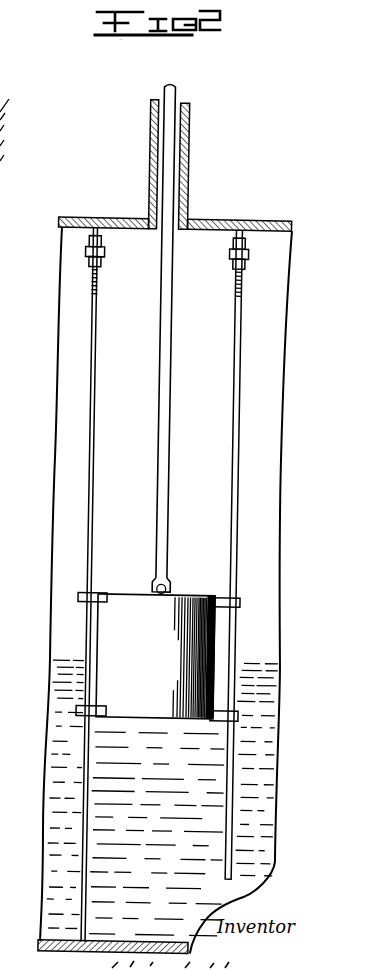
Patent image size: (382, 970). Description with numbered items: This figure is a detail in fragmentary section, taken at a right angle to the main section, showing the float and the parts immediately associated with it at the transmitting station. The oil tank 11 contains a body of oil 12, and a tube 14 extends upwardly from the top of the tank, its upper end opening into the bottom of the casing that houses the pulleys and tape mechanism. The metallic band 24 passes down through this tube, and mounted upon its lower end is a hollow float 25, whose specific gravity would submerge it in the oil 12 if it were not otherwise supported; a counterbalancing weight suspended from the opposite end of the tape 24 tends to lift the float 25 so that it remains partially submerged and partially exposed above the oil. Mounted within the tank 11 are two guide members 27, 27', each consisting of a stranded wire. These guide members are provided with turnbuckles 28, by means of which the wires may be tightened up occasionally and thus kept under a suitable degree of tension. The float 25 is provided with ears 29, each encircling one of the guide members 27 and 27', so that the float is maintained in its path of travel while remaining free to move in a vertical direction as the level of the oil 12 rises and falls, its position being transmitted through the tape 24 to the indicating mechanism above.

The oil tank 11 is at (264, 219).
The body of oil 12 is at (265, 663).
The tube 14 is at (151, 155).
The metallic band 24 is at (176, 325).
The hollow float 25 is at (155, 656).
The guide member 27 is at (102, 585).
The guide member 27' is at (217, 555).
The turnbuckles 28 is at (109, 251).
The ears 29 is at (87, 598).